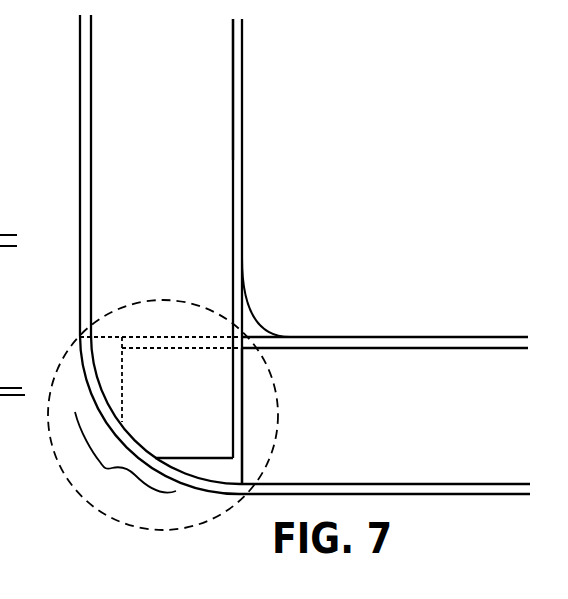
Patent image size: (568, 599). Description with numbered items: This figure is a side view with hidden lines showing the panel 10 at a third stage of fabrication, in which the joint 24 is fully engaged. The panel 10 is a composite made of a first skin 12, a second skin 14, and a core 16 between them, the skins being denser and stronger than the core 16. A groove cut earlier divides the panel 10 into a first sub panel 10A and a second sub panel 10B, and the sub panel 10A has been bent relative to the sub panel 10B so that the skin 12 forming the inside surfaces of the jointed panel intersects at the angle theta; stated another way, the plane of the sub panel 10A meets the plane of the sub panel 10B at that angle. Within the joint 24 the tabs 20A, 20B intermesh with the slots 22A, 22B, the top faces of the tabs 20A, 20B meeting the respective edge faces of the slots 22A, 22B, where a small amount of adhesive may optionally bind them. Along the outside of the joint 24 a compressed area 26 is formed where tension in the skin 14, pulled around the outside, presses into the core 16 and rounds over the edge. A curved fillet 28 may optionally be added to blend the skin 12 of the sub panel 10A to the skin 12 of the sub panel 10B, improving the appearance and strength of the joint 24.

The panel 10 is at (380, 251).
The first sub panel 10A is at (254, 56).
The second sub panel 10B is at (479, 326).
The first skin 12 is at (240, 143).
The second skin 14 is at (86, 65).
The core 16 is at (302, 287).
The tab 20A is at (222, 420).
The tab 20B is at (165, 360).
The slot 22A is at (254, 399).
The slot 22B is at (165, 322).
The joint 24 is at (122, 520).
The compressed area 26 is at (125, 456).
The fillet 28 is at (253, 317).